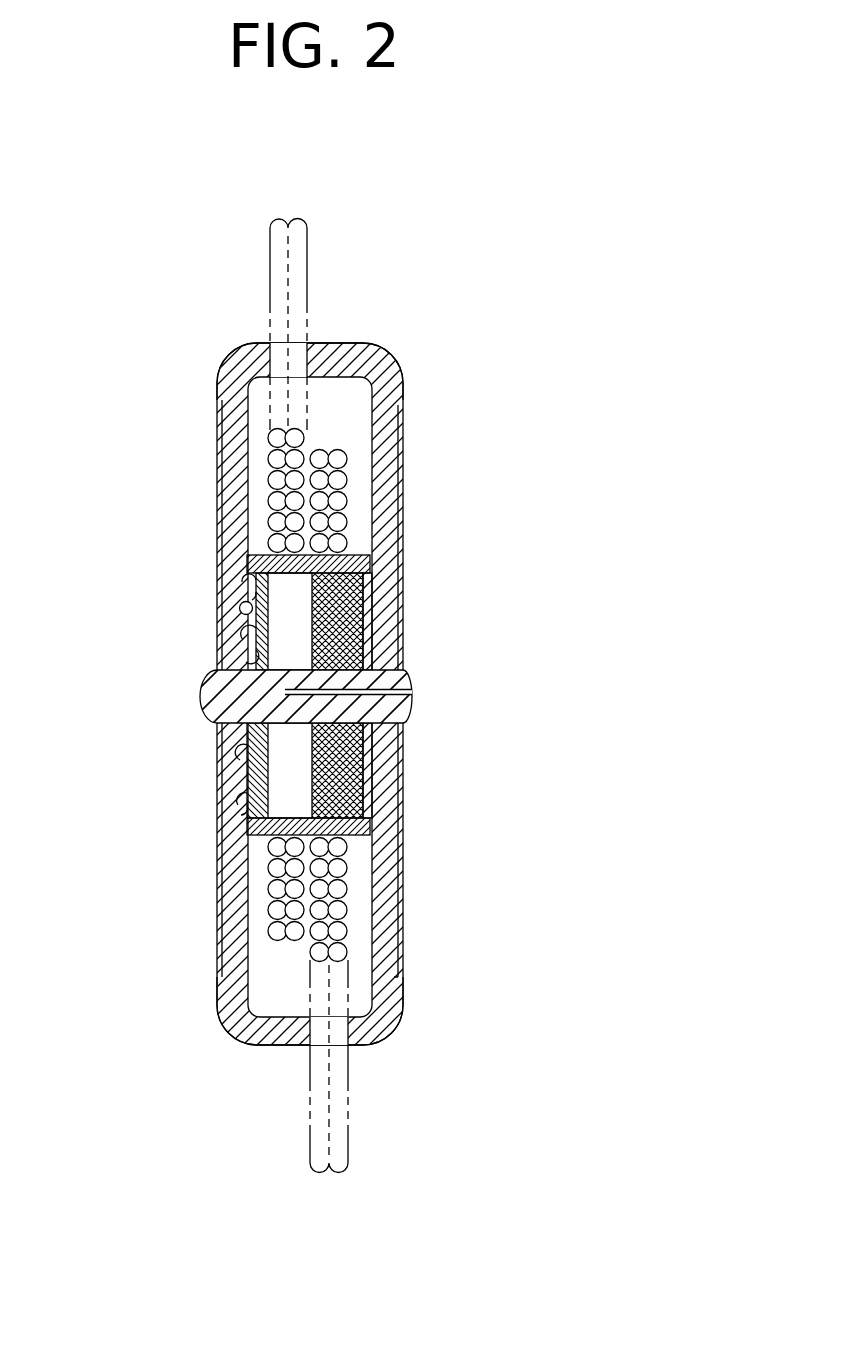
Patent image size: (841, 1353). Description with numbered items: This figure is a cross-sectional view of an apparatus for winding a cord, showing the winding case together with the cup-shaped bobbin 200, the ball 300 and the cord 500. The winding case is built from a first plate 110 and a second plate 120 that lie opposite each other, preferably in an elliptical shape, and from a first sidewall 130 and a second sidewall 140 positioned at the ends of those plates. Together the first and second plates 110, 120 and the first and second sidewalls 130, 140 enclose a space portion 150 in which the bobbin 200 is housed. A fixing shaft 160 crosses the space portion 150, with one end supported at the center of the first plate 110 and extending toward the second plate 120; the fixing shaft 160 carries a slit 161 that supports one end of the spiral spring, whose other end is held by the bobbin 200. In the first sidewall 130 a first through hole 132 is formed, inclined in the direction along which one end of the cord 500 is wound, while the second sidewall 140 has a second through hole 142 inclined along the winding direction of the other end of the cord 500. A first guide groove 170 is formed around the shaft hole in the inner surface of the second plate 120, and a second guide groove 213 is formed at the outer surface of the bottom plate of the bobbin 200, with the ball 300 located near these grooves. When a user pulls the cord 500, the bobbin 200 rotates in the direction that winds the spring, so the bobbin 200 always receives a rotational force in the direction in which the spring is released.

The first plate 110 is at (387, 503).
The second plate 120 is at (220, 945).
The first sidewall 130 is at (343, 348).
The first through hole 132 is at (268, 350).
The second sidewall 140 is at (262, 1043).
The second through hole 142 is at (352, 1043).
The space portion 150 is at (333, 414).
The fixing shaft 160 is at (203, 700).
The slit 161 is at (412, 690).
The first guide groove 170 is at (225, 640).
The bobbin 200 is at (370, 823).
The second guide groove 213 is at (223, 585).
The ball 300 is at (220, 615).
The cord 500 is at (338, 1128).